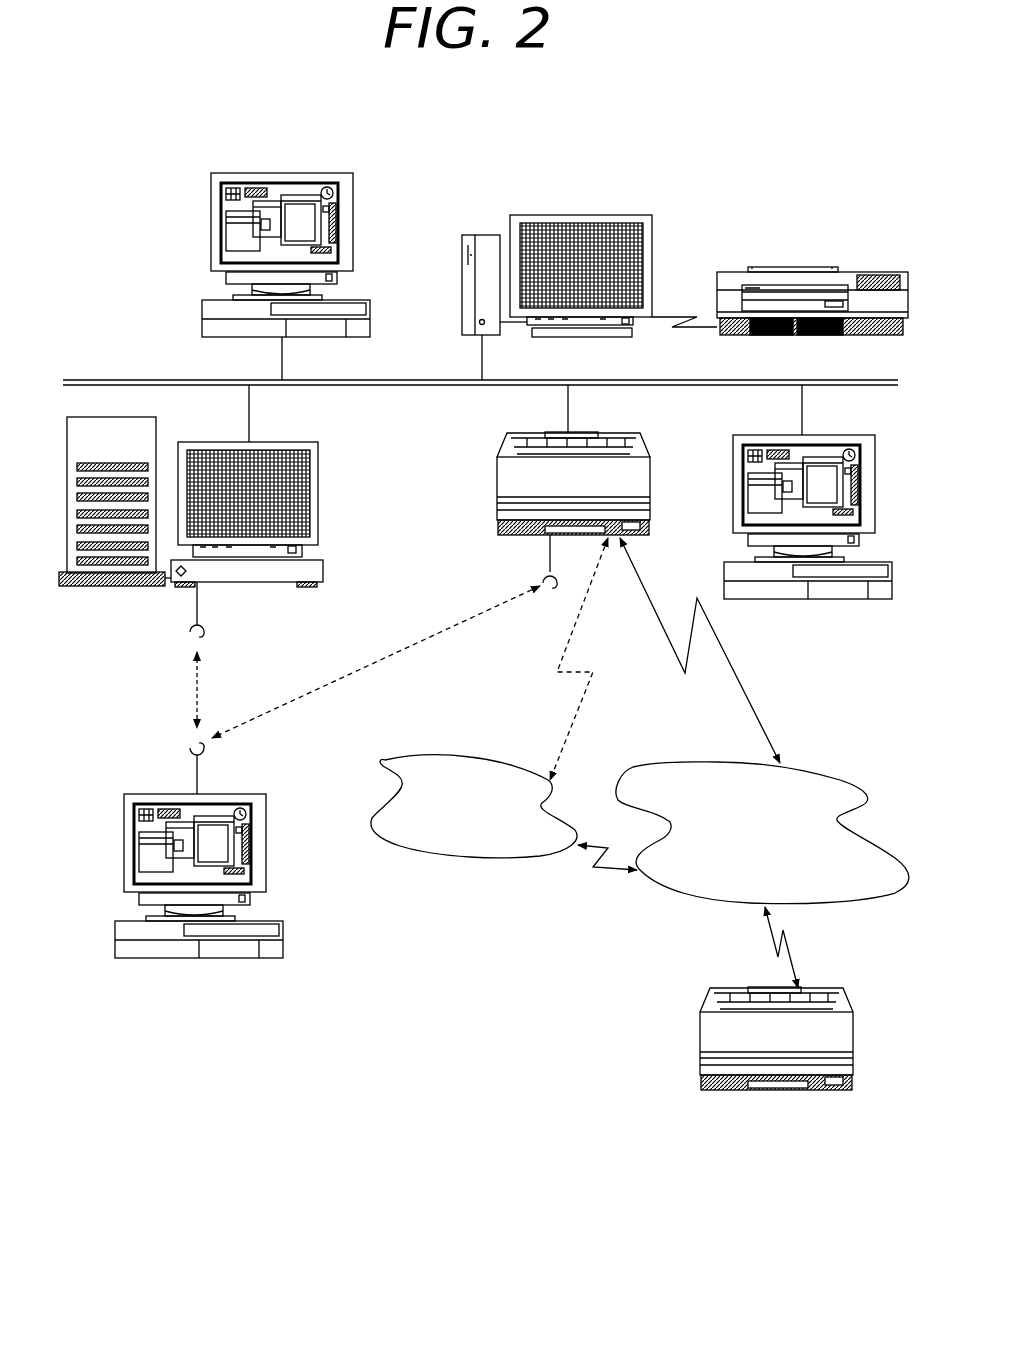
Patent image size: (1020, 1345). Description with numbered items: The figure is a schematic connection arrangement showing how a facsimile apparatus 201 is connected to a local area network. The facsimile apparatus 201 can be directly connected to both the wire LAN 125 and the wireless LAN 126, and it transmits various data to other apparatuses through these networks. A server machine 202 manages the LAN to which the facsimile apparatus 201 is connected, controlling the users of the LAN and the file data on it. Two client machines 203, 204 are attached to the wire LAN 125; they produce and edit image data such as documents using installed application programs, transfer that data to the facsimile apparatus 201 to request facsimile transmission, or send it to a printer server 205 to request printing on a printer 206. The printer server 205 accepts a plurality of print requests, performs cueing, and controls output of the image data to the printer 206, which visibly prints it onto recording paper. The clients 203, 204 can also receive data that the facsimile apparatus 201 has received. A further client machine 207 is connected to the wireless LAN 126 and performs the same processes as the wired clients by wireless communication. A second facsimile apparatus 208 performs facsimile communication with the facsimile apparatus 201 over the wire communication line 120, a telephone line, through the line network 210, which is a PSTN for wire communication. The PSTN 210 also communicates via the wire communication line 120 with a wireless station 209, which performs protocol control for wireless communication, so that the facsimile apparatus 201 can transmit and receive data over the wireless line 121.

The wire communication line 120 is at (748, 697).
The wireless line 121 is at (568, 640).
The wire LAN 125 is at (782, 381).
The wireless LAN 126 is at (257, 717).
The facsimile apparatus 201 is at (500, 535).
The server machine 202 is at (250, 585).
The client machine 203 is at (282, 173).
The client machine 204 is at (815, 600).
The printer server 205 is at (583, 216).
The printer 206 is at (795, 272).
The client machine 207 is at (207, 958).
The facsimile apparatus 208 is at (783, 1092).
The wireless station 209 is at (473, 812).
The line network (PSTN) 210 is at (747, 843).